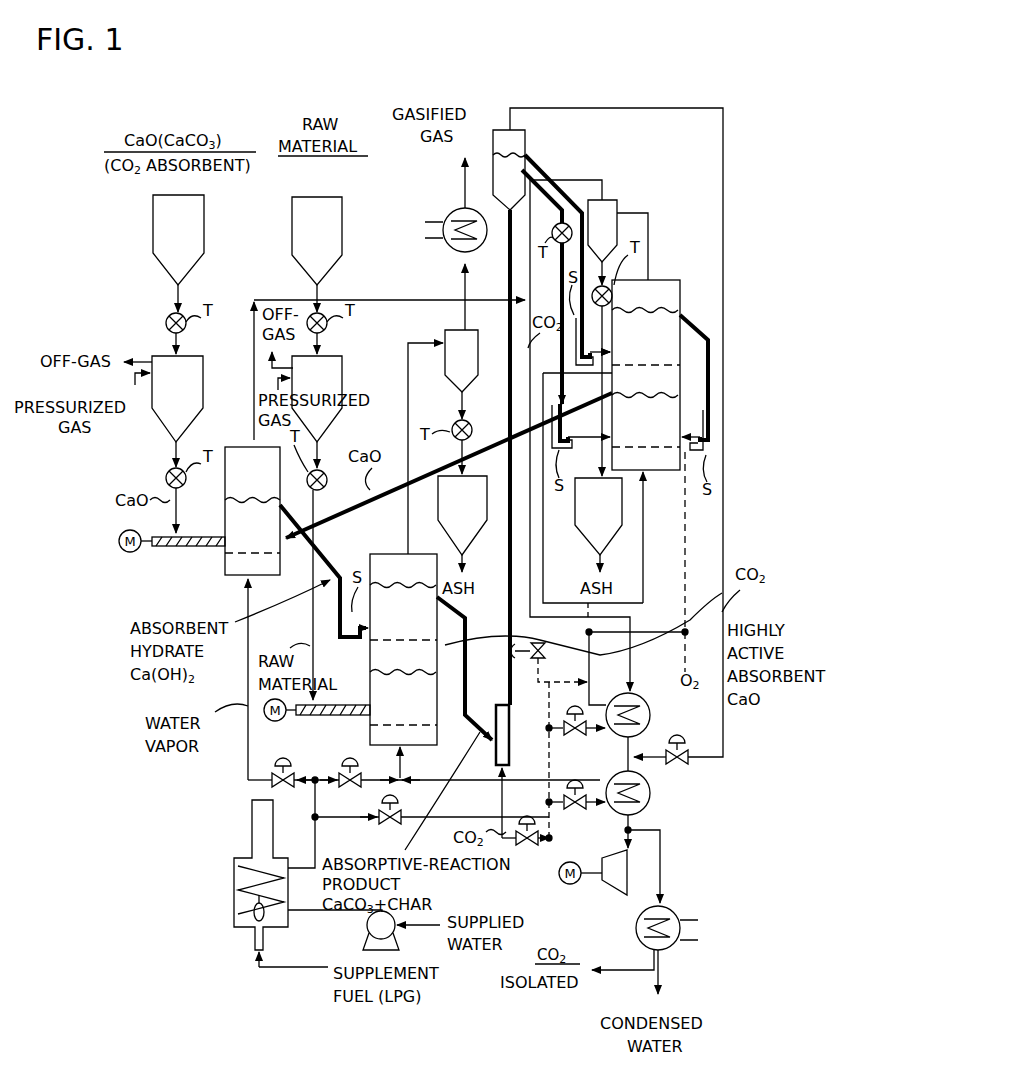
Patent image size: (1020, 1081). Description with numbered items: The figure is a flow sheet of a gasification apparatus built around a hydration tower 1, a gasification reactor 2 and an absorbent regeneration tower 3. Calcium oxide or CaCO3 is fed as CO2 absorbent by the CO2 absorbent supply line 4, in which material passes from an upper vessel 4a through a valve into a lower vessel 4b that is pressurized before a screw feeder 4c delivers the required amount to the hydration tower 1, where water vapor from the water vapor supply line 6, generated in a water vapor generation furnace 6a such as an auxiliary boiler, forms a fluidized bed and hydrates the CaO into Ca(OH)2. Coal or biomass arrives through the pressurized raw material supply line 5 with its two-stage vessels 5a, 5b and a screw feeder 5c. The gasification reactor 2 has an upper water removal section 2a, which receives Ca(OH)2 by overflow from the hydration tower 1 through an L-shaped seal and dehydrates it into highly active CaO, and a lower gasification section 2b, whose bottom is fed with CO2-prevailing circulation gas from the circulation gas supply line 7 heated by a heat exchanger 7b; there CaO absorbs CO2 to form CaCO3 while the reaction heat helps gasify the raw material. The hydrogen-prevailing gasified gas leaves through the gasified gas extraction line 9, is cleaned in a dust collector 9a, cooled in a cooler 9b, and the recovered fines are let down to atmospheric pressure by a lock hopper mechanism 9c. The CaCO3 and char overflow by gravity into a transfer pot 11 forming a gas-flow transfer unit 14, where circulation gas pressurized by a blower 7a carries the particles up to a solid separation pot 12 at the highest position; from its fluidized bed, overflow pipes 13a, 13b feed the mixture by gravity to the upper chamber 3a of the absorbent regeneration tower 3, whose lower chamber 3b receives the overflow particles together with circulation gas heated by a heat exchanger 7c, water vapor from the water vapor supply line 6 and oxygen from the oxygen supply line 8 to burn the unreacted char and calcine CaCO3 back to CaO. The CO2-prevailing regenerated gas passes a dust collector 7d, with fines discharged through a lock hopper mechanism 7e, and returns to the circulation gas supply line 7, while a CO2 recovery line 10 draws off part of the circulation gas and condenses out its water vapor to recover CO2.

The hydration tower 1 is at (232, 445).
The gasification reactor 2 is at (368, 556).
The upper water removal section 2a is at (405, 565).
The lower gasification section 2b is at (402, 680).
The absorbent regeneration tower 3 is at (670, 280).
The upper chamber 3a is at (670, 300).
The lower chamber 3b is at (640, 400).
The CO2 absorbent supply line 4 is at (148, 212).
The upper vessel 4a is at (168, 262).
The lower vessel 4b is at (165, 410).
The screw feeder 4c is at (176, 550).
The raw material supply line 5 is at (288, 210).
The upper vessel of raw material supply line 5a is at (340, 210).
The lower vessel of raw material supply line 5b is at (340, 367).
The screw feeder 5c is at (322, 718).
The water vapor supply line 6 is at (228, 850).
The water vapor generation furnace 6a is at (250, 922).
The circulation gas supply line 7 is at (665, 770).
The blower 7a is at (614, 888).
The heat exchanger 7b is at (652, 802).
The heat exchanger 7c is at (652, 715).
The dust collector 7d is at (618, 206).
The lock hopper mechanism 7e is at (590, 530).
The oxygen supply line 8 is at (680, 640).
The gasified gas extraction line 9 is at (453, 272).
The dust collector 9a is at (446, 366).
The cooler 9b is at (448, 215).
The lock hopper mechanism 9c is at (470, 522).
The CO2 recovery line 10 is at (672, 952).
The transfer pot 11 is at (496, 730).
The solid separation pot 12 is at (498, 142).
The overflow pipe 13a is at (546, 165).
The overflow pipe 13b is at (548, 195).
The gas-flow transfer unit 14 is at (505, 346).